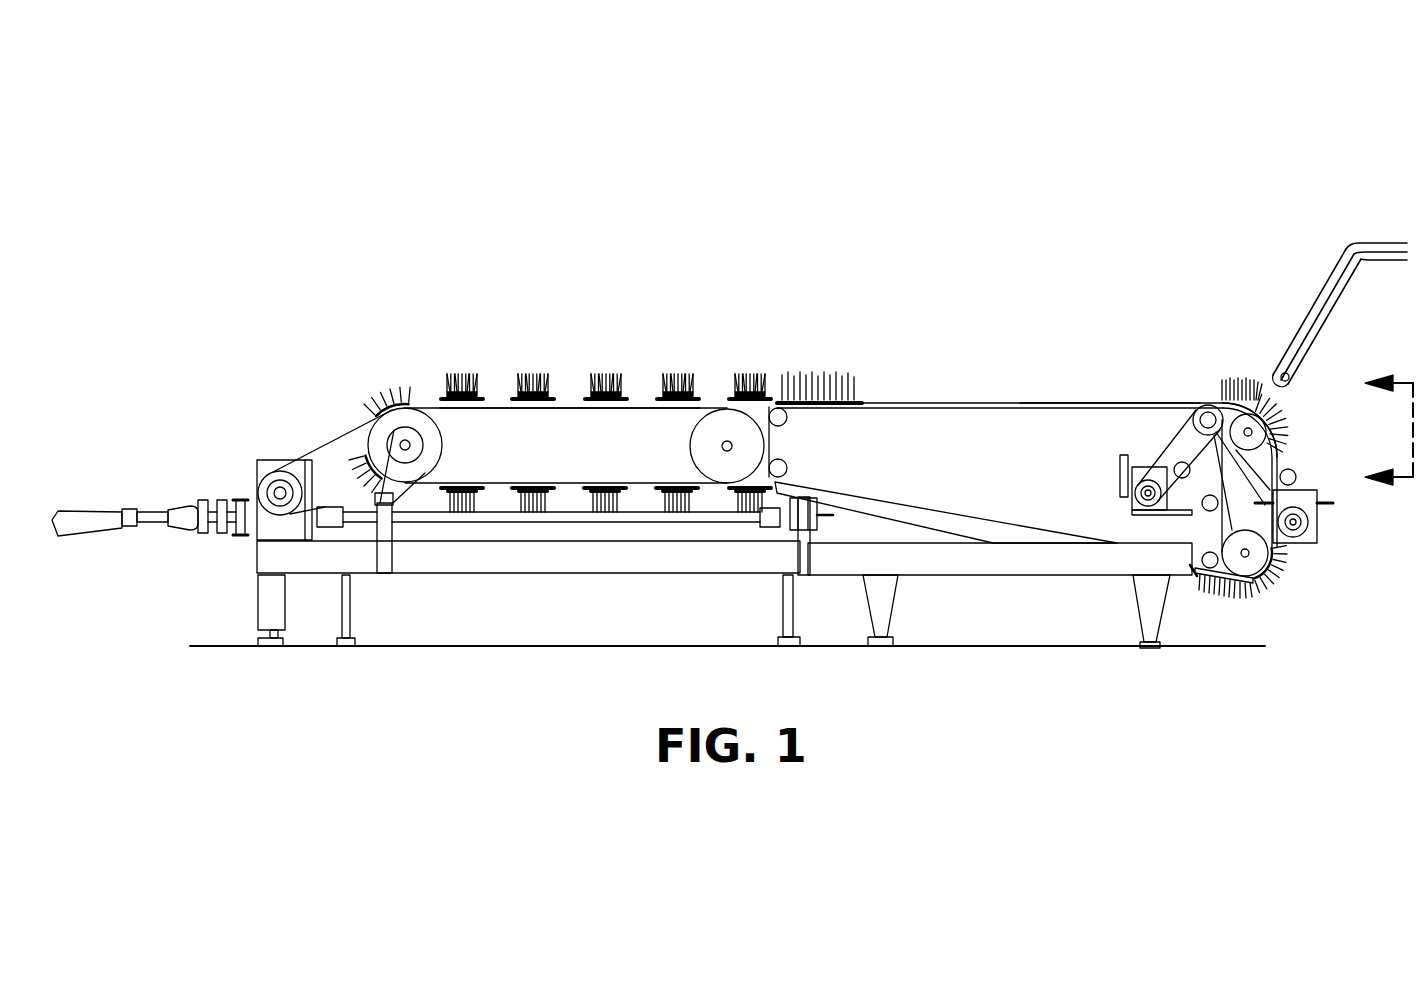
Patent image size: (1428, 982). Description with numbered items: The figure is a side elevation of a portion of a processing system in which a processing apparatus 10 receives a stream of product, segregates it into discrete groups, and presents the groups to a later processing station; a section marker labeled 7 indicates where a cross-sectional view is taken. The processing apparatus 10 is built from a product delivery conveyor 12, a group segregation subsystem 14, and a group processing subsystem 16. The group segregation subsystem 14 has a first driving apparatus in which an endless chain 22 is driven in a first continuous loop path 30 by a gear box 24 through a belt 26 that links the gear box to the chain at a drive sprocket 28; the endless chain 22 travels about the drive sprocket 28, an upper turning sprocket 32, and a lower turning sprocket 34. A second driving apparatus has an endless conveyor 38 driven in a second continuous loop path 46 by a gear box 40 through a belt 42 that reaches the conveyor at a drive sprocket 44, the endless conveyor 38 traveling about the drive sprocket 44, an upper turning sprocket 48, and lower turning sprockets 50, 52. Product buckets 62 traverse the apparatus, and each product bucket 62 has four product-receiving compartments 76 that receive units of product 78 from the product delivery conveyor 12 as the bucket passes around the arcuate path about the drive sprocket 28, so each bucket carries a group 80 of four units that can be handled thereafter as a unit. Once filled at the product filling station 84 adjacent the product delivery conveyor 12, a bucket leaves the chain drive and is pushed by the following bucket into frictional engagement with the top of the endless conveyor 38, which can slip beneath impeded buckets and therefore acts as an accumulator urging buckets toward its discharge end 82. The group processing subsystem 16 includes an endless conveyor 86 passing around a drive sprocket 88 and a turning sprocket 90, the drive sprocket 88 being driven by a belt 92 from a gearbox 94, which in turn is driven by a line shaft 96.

The processing apparatus 10 is at (1145, 155).
The product delivery conveyor 12 is at (1314, 260).
The group segregation subsystem 14 is at (1028, 388).
The group processing subsystem 16 is at (569, 400).
The endless chain 22 is at (1218, 530).
The gear box 24 is at (1317, 525).
The belt 26 is at (1238, 470).
The drive sprocket 28 is at (1278, 440).
The first continuous loop path 30 is at (1283, 558).
The upper turning sprocket 32 is at (1200, 406).
The lower turning sprocket 34 is at (1250, 587).
The endless conveyor 38 is at (945, 402).
The gear box 40 is at (1120, 480).
The belt 42 is at (1165, 456).
The drive sprocket 44 is at (1210, 402).
The second continuous loop path 46 is at (883, 402).
The upper turning sprocket 48 is at (790, 418).
The lower turning sprocket 50 is at (790, 468).
The lower turning sprocket 52 is at (1193, 567).
The product bucket 62 is at (508, 381).
The product-receiving compartment 76 is at (395, 385).
The unit of product 78 is at (548, 382).
The group 80 is at (531, 372).
The discharge end 82 is at (775, 386).
The product filling station 84 is at (1267, 377).
The endless conveyor 86 is at (432, 405).
The drive sprocket 88 is at (442, 447).
The turning sprocket 90 is at (692, 446).
The belt 92 is at (350, 445).
The gearbox 94 is at (278, 458).
The line shaft 96 is at (87, 510).
The section line 7- 7 is at (1389, 431).